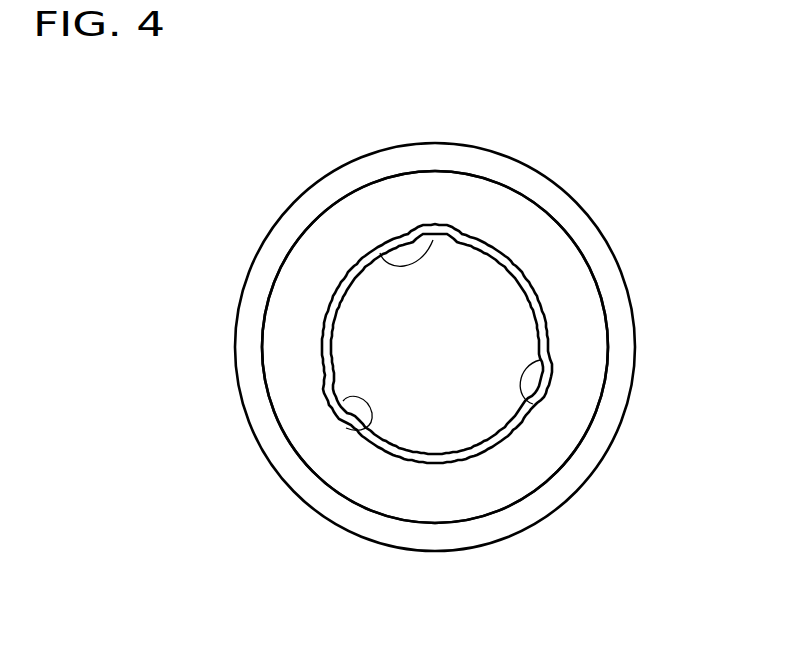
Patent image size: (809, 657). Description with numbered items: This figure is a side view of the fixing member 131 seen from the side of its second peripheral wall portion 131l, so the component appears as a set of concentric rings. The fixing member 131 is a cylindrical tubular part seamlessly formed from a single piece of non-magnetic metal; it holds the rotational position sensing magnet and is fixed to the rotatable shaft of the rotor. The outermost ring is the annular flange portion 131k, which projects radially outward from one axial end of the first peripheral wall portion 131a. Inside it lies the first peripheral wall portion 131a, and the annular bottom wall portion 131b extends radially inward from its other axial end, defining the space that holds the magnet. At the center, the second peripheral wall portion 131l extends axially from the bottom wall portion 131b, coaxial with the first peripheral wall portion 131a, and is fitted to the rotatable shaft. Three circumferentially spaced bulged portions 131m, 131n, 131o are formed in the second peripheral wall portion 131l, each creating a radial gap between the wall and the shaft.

The fixing member 131 is at (501, 124).
The first peripheral wall portion 131a is at (603, 300).
The bottom wall portion 131b is at (558, 248).
The flange portion 131k is at (525, 518).
The second peripheral wall portion 131l is at (390, 450).
The bulged portion 131m is at (378, 256).
The bulged portion 131n is at (540, 360).
The bulged portion 131o is at (367, 430).